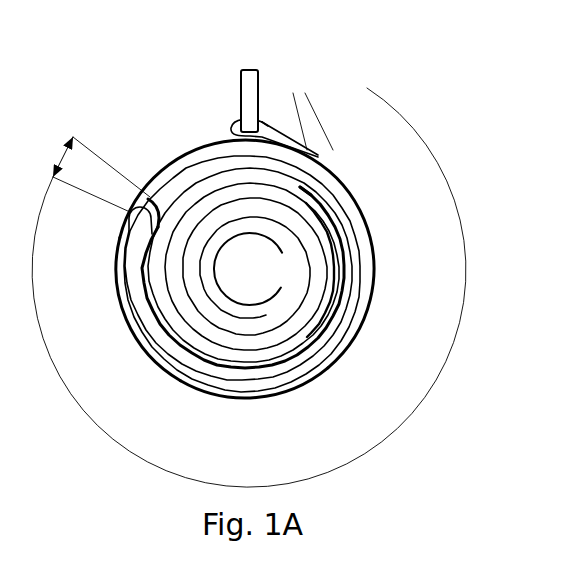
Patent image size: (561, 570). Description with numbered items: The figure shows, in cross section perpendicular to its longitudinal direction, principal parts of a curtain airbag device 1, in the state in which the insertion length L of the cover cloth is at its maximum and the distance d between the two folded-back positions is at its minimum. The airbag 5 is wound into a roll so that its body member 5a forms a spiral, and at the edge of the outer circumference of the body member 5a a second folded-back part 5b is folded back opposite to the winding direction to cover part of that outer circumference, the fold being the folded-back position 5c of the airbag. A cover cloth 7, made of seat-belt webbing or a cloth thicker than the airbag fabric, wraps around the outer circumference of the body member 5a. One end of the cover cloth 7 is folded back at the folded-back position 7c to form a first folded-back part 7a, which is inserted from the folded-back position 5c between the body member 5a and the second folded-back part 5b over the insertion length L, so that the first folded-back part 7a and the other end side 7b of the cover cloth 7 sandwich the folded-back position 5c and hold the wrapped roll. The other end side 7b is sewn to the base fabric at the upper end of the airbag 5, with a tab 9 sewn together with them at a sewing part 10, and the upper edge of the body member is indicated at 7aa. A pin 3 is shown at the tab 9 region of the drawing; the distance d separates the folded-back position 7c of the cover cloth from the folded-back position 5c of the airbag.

The curtain airbag device 1 is at (338, 51).
The pin 3 is at (246, 100).
The airbag 5 is at (182, 187).
The body member 5a is at (320, 160).
The second folded-back part 5b is at (175, 378).
The folded-back position of the airbag 5c is at (138, 217).
The cover cloth 7 is at (368, 322).
The first folded-back part 7a is at (350, 256).
The upper edge of the body member 7aa is at (305, 190).
The other end side of the cover cloth 7b is at (317, 384).
The folded-back position of the cover cloth 7c is at (158, 200).
The tab 9 is at (302, 136).
The sewing part 10 is at (308, 106).
The distance between folded-back positions d is at (92, 174).
The insertion length L is at (249, 292).